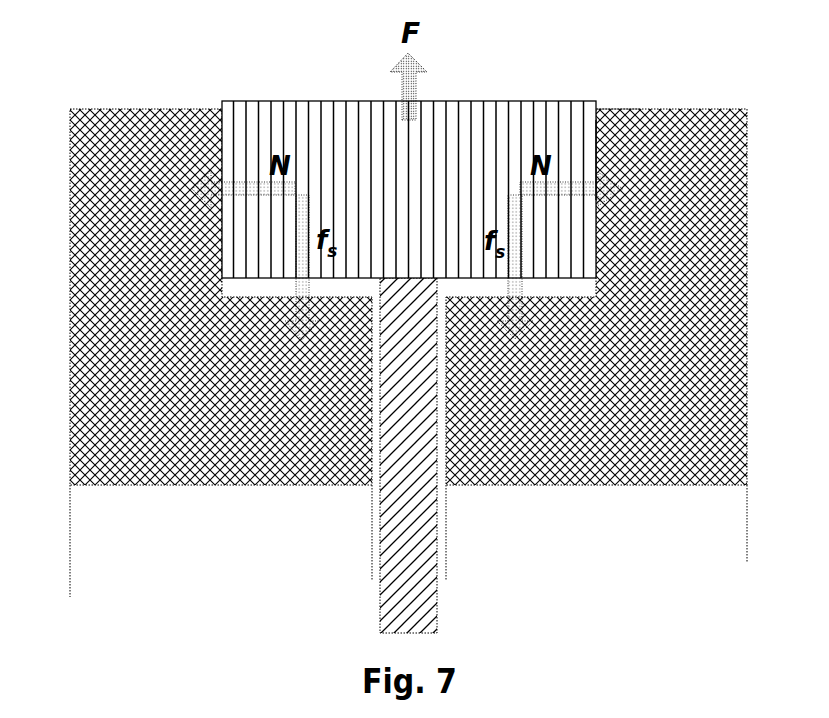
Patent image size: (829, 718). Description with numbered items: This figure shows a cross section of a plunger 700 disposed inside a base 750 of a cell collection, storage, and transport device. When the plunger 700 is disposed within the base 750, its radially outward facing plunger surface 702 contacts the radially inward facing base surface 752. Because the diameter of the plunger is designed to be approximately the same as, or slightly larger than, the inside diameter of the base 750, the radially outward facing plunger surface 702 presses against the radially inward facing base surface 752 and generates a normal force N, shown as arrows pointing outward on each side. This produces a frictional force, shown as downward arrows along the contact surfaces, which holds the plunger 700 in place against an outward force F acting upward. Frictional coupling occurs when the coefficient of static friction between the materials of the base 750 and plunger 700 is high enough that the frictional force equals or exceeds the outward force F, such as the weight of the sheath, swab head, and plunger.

The plunger 700 is at (372, 101).
The radially outward facing plunger surface 702 is at (595, 148).
The base 750 is at (104, 109).
The radially inward facing base surface 752 is at (598, 157).